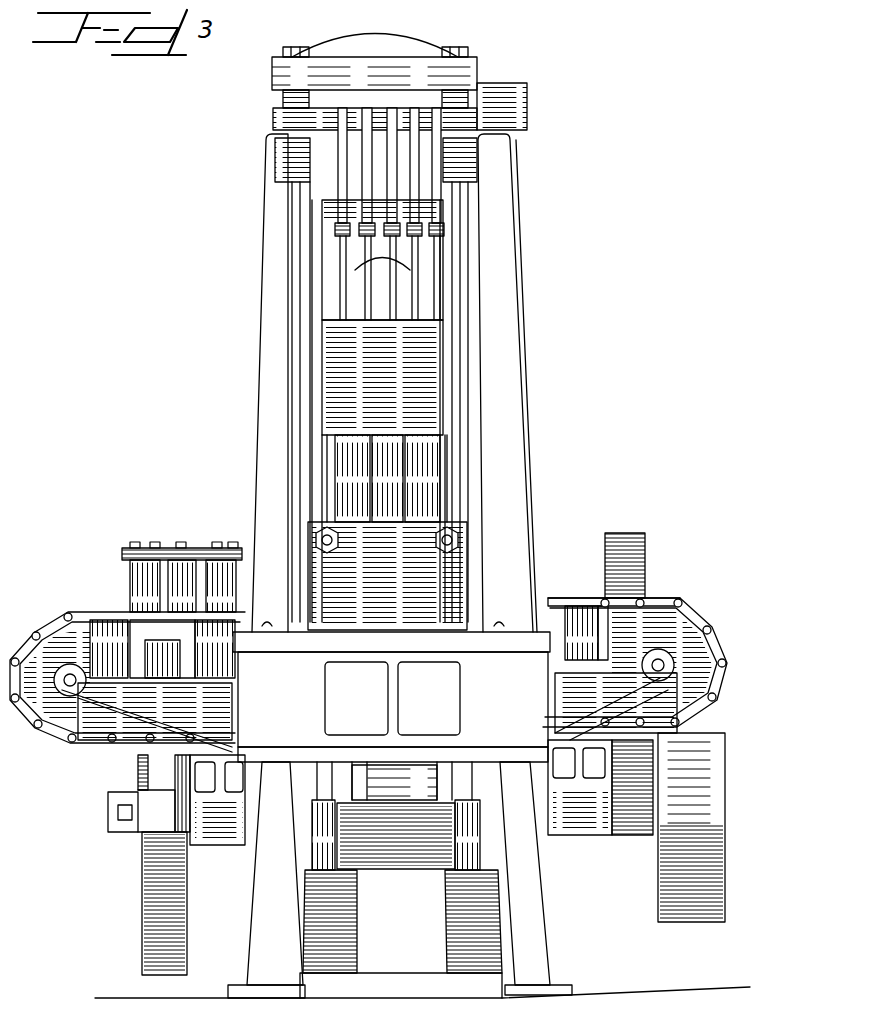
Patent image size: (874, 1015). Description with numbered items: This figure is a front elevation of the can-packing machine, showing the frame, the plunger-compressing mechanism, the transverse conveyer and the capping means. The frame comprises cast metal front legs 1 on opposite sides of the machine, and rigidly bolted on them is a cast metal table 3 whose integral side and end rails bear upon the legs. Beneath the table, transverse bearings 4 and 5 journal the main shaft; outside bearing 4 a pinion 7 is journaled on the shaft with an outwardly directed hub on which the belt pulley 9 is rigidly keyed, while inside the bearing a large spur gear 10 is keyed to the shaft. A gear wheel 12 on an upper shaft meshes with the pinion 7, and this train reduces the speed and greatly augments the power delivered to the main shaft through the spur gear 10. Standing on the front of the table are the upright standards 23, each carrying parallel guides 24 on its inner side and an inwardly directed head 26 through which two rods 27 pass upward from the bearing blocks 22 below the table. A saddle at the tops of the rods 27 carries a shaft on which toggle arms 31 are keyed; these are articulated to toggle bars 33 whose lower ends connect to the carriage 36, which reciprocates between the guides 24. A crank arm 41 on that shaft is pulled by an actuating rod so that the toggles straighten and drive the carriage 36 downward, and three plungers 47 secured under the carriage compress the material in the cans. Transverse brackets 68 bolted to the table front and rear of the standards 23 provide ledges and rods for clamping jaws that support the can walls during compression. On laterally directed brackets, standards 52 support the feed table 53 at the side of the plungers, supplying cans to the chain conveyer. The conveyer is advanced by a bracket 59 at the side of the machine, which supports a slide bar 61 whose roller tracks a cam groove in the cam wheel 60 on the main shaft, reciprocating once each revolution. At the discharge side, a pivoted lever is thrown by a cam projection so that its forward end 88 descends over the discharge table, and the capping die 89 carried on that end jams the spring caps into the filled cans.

The front legs 1 is at (262, 933).
The table 3 is at (391, 697).
The bearing 4 is at (228, 815).
The bearing 5 is at (570, 820).
The pinion 7 is at (632, 820).
The belt pulley 9 is at (725, 886).
The spur gear 10 is at (450, 945).
The gear wheel 12 is at (642, 555).
The bearing blocks 22 is at (450, 875).
The standards 23 is at (262, 522).
The guides 24 is at (300, 206).
The head 26 is at (285, 155).
The rods 27 is at (298, 396).
The toggle arms 31 is at (392, 157).
The toggle bars 33 is at (335, 270).
The carriage 36 is at (425, 365).
The crank arm 41 is at (527, 130).
The plungers 47 is at (355, 487).
The standards 52 is at (575, 628).
The table 53 is at (582, 596).
The bracket 59 is at (150, 812).
The cam wheel 60 is at (145, 900).
The slide bar 61 is at (118, 812).
The brackets 68 is at (450, 567).
The lever end 88 is at (142, 548).
The capping die 89 is at (182, 560).